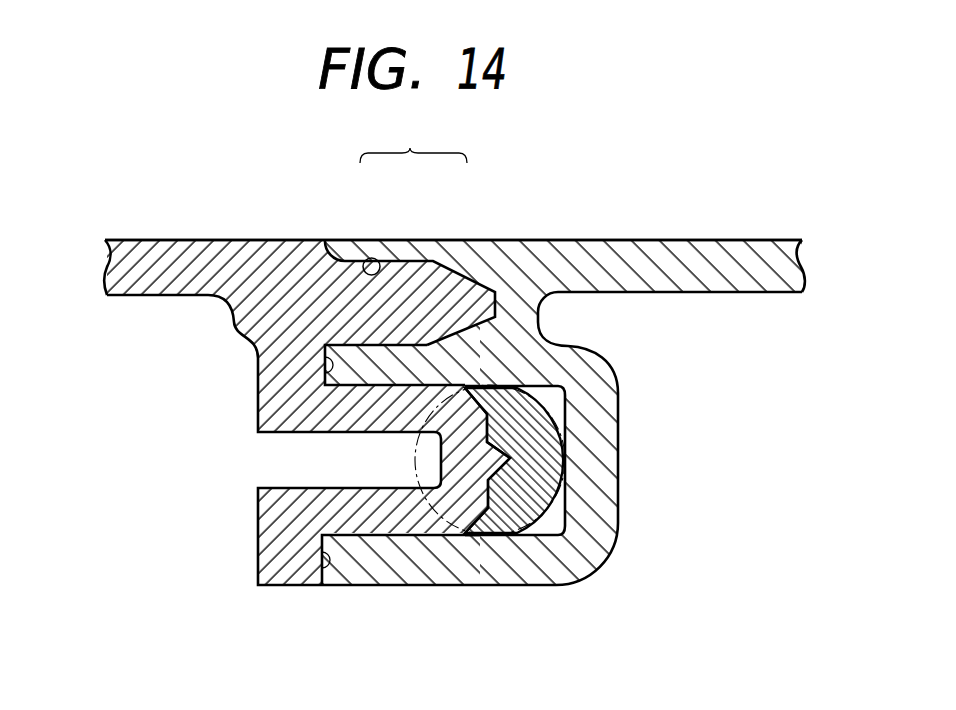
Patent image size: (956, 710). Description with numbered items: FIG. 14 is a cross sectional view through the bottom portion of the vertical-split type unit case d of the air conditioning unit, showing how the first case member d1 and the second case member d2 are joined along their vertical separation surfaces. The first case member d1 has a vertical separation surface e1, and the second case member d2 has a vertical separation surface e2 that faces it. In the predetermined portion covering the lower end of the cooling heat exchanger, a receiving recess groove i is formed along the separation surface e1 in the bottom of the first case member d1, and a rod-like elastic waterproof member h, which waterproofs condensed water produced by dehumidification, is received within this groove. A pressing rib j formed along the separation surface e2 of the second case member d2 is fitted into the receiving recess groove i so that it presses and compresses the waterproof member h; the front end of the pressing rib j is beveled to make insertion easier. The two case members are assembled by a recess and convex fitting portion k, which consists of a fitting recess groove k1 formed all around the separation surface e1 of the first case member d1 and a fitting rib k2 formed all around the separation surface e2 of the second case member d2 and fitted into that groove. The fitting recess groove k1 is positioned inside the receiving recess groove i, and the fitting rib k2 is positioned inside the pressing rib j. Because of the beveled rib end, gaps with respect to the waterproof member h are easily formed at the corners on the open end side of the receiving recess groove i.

The unit case d is at (538, 245).
The first case member d1 is at (677, 247).
The second case member d2 is at (183, 240).
The separation surface e1 is at (320, 553).
The separation surface e2 is at (337, 368).
The waterproof member h is at (555, 460).
The receiving recess groove i is at (552, 514).
The pressing rib j is at (416, 525).
The recess and convex fitting portion k is at (413, 141).
The fitting recess groove k1 is at (365, 258).
The fitting rib k2 is at (425, 303).